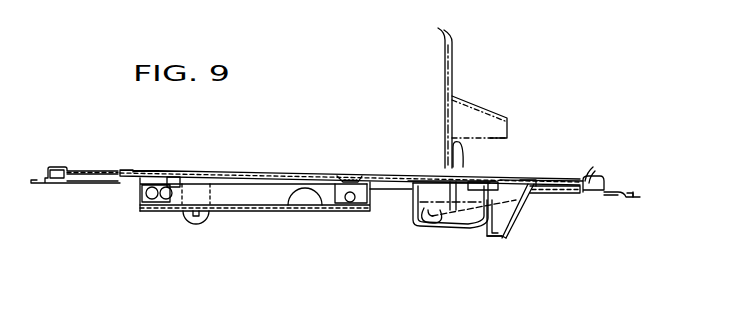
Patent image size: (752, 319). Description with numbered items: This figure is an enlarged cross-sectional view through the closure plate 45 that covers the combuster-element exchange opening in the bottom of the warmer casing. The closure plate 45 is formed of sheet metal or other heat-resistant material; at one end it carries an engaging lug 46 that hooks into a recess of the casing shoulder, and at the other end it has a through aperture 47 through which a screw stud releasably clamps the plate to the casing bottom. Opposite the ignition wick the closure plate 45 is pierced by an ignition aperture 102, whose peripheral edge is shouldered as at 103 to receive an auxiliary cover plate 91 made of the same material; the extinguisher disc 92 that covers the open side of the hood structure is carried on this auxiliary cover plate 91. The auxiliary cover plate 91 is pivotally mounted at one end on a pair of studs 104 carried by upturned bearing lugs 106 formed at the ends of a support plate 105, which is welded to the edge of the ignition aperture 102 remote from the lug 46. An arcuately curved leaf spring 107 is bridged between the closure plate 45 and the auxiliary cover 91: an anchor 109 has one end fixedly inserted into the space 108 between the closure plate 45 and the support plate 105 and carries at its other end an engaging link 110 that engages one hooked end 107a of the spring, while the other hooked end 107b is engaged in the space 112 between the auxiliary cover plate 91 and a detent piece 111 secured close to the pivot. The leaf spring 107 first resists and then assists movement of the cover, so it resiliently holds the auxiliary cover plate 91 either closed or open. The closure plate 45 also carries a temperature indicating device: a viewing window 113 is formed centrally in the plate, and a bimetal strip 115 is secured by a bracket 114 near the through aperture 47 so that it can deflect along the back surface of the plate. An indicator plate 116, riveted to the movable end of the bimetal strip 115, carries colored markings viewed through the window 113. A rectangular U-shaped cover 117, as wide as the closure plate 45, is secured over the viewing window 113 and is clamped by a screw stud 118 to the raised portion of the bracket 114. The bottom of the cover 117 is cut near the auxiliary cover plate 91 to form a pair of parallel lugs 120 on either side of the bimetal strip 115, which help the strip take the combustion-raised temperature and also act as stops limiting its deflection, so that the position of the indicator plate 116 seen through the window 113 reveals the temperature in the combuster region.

The closure plate 45 is at (240, 171).
The engaging lug 46 is at (623, 191).
The through aperture 47 is at (83, 186).
The auxiliary cover plate 91 is at (592, 178).
The extinguisher disc 92 is at (510, 238).
The ignition aperture 102 is at (530, 200).
The shoulder 103 is at (573, 193).
The studs 104 is at (470, 172).
The support plate 105 is at (405, 193).
The bearing lugs 106 is at (405, 178).
The leaf spring 107 is at (452, 223).
The hooked end 107a is at (416, 212).
The hooked end 107b is at (548, 181).
The space 108 is at (445, 176).
The anchor 109 is at (422, 203).
The engaging link 110 is at (437, 217).
The detent piece 111 is at (473, 207).
The space 112 is at (495, 179).
The viewing window 113 is at (353, 176).
The bracket 114 is at (172, 177).
The bimetal strip 115 is at (263, 188).
The indicator plate 116 is at (332, 176).
The rectangular cover 117 is at (270, 213).
The screw stud 118 is at (202, 220).
The lugs 120 is at (307, 203).